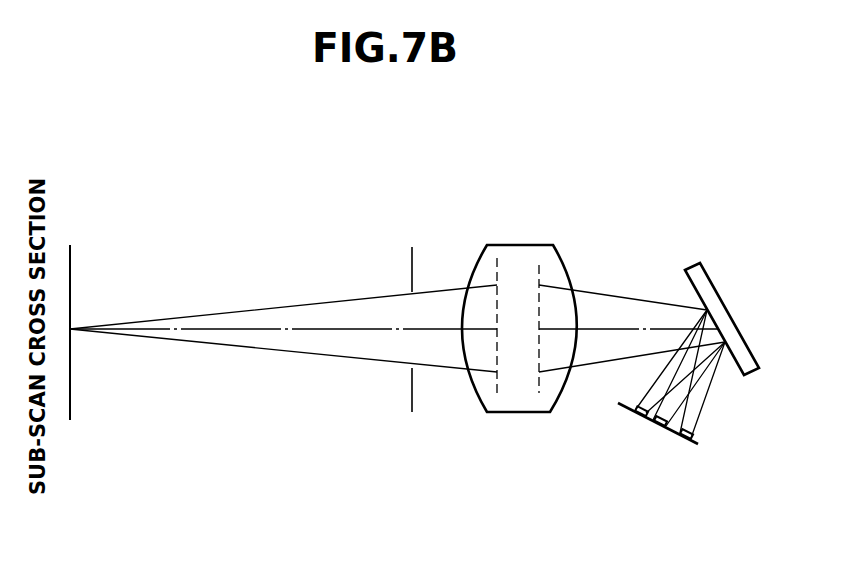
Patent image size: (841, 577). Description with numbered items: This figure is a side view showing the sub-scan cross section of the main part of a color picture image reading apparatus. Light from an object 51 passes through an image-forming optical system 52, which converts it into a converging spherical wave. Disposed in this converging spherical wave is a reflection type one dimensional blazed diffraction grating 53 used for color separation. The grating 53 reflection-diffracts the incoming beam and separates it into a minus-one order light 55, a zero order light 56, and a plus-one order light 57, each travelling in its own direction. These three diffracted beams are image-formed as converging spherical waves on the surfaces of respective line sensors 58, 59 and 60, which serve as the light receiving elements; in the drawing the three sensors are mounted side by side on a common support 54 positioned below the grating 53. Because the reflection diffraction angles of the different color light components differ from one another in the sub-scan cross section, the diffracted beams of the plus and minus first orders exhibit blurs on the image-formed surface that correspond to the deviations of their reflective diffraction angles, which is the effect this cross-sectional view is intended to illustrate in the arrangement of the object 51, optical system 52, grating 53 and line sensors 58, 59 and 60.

The object 51 is at (72, 268).
The image-forming optical system 52 is at (563, 229).
The reflection type one dimensional blazed diffraction grating 53 is at (700, 280).
The detector substrate 54 is at (697, 448).
The −1 order light 55 is at (660, 375).
The 0 order light 56 is at (683, 386).
The +1 order light 57 is at (695, 424).
The line sensor 58 is at (633, 412).
The line sensor 59 is at (657, 425).
The line sensor 60 is at (688, 442).